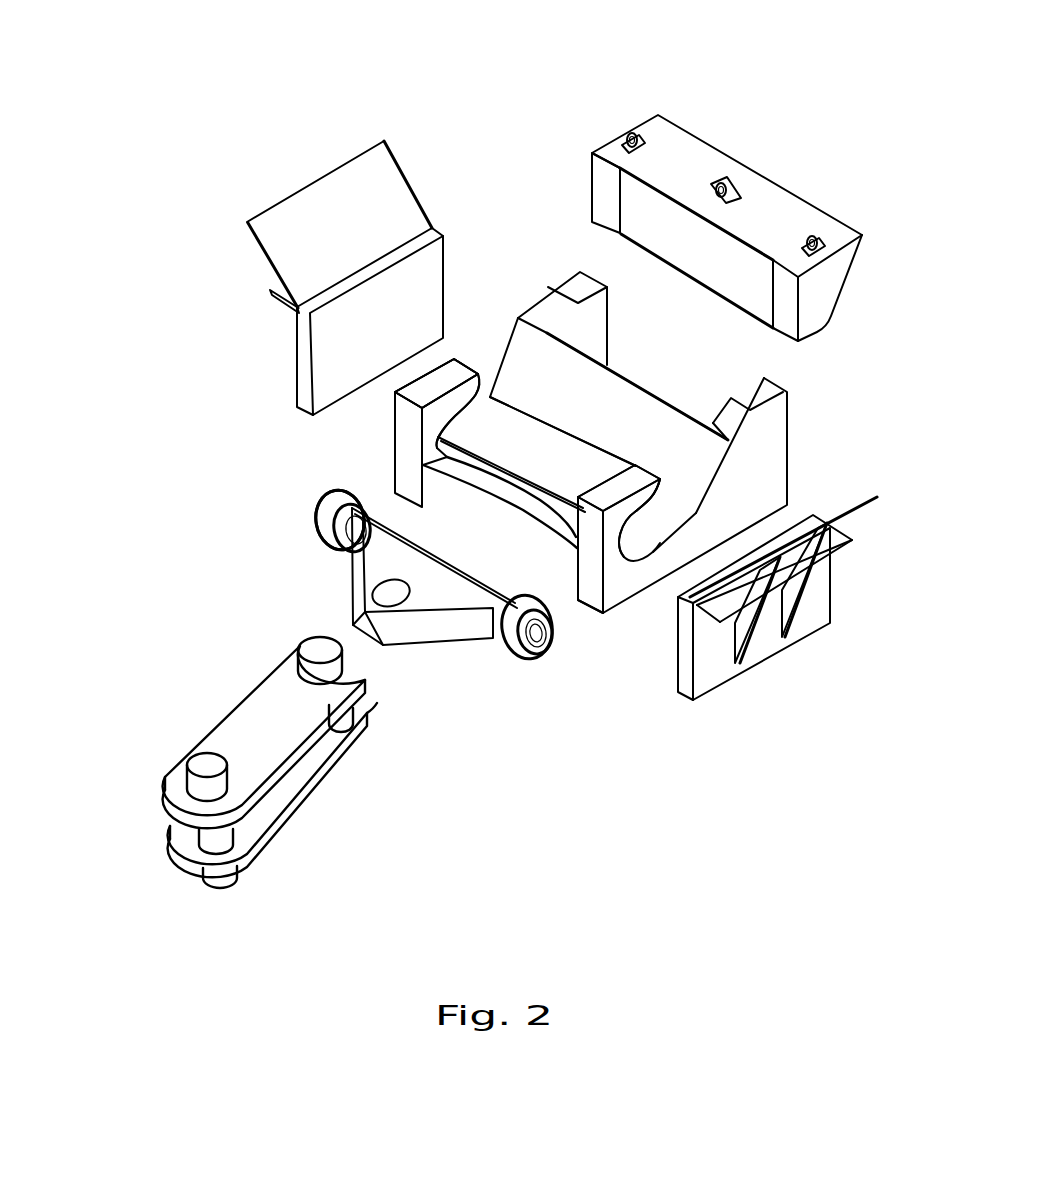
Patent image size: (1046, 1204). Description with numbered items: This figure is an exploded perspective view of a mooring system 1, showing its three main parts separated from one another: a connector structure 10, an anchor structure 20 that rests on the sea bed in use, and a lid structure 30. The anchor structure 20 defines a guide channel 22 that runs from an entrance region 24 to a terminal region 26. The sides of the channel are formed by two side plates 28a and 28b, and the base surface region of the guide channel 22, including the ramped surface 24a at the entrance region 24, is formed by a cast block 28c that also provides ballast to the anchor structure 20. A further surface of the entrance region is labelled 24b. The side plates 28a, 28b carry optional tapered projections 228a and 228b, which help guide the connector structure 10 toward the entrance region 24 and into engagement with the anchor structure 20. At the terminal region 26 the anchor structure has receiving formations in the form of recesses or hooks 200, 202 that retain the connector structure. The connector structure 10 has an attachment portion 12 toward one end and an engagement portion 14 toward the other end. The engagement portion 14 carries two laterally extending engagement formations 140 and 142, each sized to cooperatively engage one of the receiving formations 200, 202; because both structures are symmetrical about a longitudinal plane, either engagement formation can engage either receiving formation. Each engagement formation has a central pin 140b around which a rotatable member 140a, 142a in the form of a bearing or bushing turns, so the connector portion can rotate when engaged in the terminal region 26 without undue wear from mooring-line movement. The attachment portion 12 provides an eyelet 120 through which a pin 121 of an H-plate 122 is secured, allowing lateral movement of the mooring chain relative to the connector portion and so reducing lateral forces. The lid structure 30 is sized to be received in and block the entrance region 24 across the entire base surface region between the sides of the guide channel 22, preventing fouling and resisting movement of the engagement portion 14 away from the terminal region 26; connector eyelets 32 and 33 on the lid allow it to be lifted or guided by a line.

The mooring system 1 is at (741, 774).
The connector structure 10 is at (318, 526).
The attachment portion 12 is at (221, 768).
The engagement portion 14 is at (383, 622).
The anchor structure 20 is at (556, 286).
The guide channel 22 is at (465, 407).
The entrance region 24 is at (490, 367).
The ramped surface 24a is at (605, 392).
The curved surface of recess 24b is at (642, 470).
The terminal region 26 is at (654, 552).
The side plate 28a is at (297, 355).
The side plate 28b is at (712, 673).
The cast block 28c is at (563, 430).
The lid structure 30 is at (762, 166).
The connector eyelet 32 is at (722, 187).
The connector eyelet 33 is at (630, 135).
The eyelet 120 is at (390, 593).
The pin 121 is at (308, 650).
The H-plate 122 is at (172, 783).
The engagement formation 140 is at (483, 626).
The rotatable member 140a is at (503, 650).
The central pin 140b is at (531, 673).
The engagement formation 142 is at (262, 534).
The rotatable member 142a is at (356, 529).
The receiving formation 200 is at (450, 372).
The receiving formation 202 is at (596, 526).
The tapered projection 228a is at (302, 188).
The tapered projection 228b is at (793, 583).